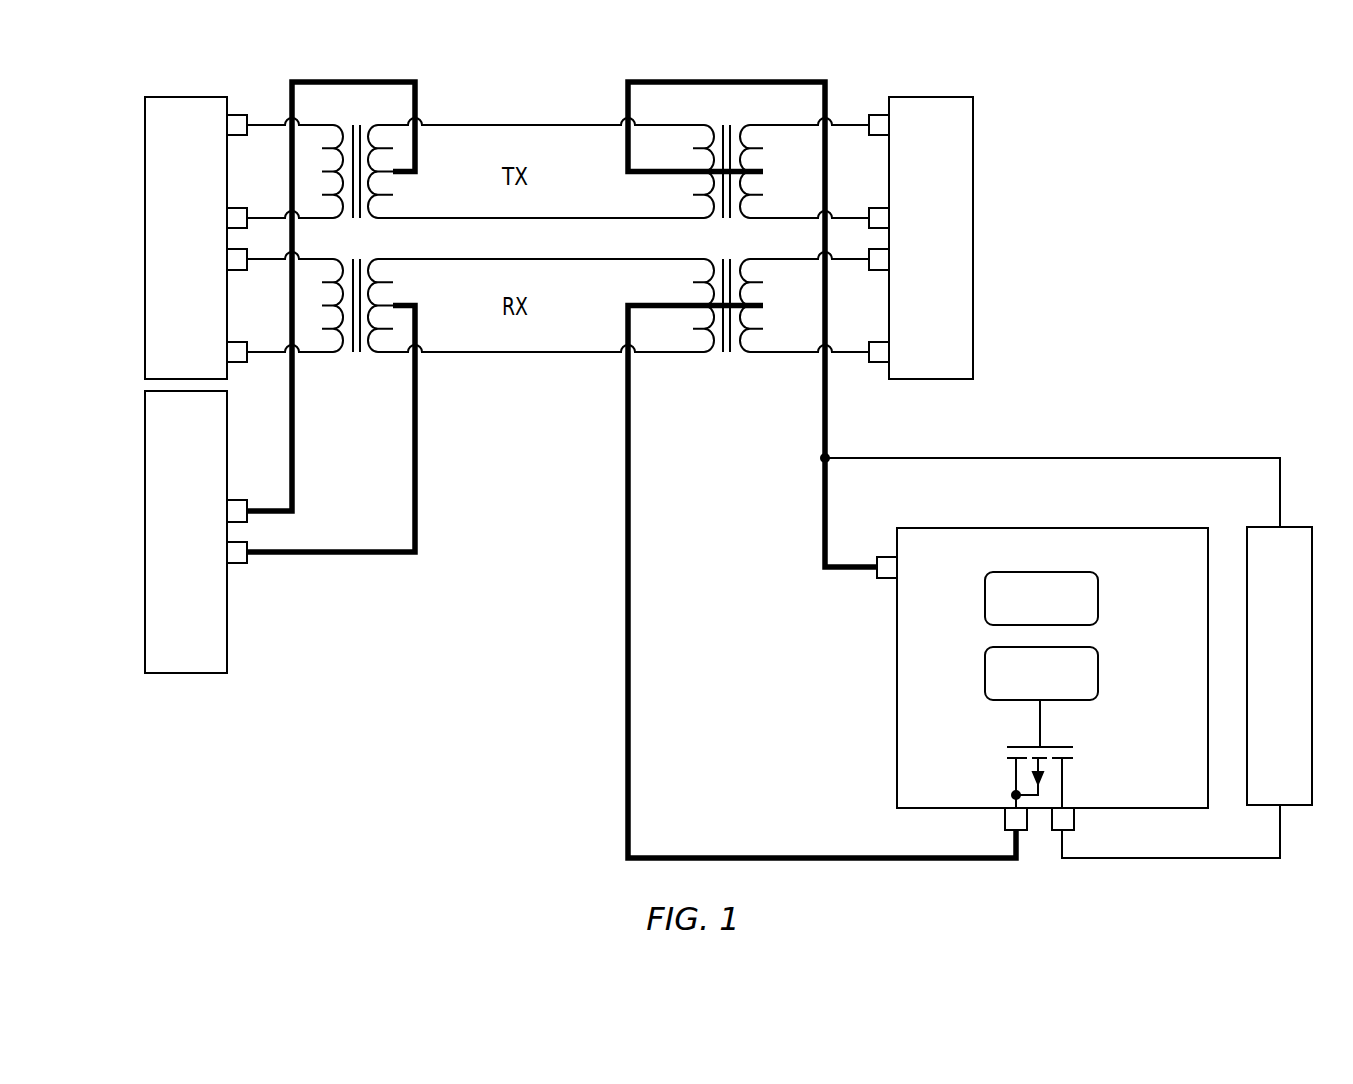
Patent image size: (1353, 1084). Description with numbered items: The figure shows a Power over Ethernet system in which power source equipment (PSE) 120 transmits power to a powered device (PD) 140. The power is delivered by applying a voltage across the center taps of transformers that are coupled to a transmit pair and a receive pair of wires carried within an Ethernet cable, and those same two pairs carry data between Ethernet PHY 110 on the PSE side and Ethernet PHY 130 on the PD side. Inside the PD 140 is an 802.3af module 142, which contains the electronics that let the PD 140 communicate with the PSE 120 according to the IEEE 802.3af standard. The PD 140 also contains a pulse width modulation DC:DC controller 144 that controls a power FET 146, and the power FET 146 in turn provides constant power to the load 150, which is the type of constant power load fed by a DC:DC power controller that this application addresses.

The Ethernet PHY 110 is at (145, 218).
The power source equipment (PSE) 120 is at (145, 521).
The Ethernet PHY 130 is at (973, 218).
The powered device (PD) 140 is at (1044, 528).
The 802.3af module 142 is at (985, 596).
The pulse width modulation (PWM) DC:DC controller 144 is at (985, 671).
The power FET 146 is at (1005, 757).
The load 150 is at (1257, 527).